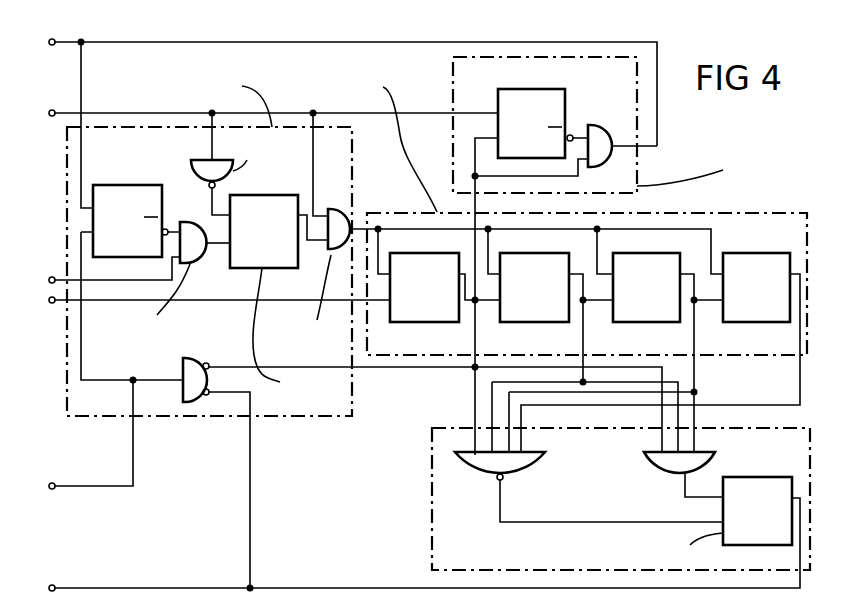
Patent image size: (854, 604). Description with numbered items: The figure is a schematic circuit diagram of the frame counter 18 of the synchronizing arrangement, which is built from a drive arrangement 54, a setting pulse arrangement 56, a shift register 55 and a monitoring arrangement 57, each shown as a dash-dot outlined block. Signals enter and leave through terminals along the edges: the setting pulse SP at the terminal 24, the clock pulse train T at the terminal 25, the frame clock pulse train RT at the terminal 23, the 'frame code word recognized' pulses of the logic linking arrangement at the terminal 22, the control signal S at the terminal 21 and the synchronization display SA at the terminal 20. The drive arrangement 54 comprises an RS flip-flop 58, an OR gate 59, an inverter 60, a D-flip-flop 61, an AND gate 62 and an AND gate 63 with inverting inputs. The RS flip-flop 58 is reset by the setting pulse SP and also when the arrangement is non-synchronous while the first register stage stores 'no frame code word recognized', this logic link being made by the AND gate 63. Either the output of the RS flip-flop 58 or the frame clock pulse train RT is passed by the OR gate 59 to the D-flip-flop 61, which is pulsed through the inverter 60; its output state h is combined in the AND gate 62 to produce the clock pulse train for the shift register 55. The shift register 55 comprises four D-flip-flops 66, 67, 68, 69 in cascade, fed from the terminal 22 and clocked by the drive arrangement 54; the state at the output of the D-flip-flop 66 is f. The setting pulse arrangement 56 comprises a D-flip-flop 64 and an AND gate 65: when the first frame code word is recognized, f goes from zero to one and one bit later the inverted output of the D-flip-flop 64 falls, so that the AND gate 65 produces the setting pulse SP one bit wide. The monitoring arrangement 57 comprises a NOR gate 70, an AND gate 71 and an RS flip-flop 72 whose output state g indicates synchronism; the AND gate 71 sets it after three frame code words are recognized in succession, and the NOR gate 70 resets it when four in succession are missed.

The frame counter 18 is at (352, 505).
The terminal 20 is at (412, 551).
The terminal 21 is at (79, 441).
The terminal 22 is at (206, 306).
The terminal 23 is at (101, 274).
The terminal 24 is at (339, 111).
The terminal 25 is at (260, 150).
The drive arrangement 54 is at (353, 162).
The shift register 55 is at (765, 213).
The setting pulse arrangement 56 is at (452, 62).
The monitoring arrangement 57 is at (453, 427).
The RS flip-flop 58 is at (132, 272).
The OR gate 59 is at (166, 276).
The inverter 60 is at (226, 177).
The D-flip-flop 61 is at (292, 294).
The AND gate 62 is at (495, 269).
The AND gate 63 is at (422, 459).
The D-flip-flop 64 is at (530, 259).
The AND gate 65 is at (566, 139).
The D-flip-flop 66 is at (445, 301).
The D-flip-flop 67 is at (585, 352).
The D-flip-flop 68 is at (616, 352).
The D-flip-flop 69 is at (660, 352).
The NOR gate 70 is at (589, 486).
The AND gate 71 is at (672, 473).
The RS flip-flop 72 is at (707, 510).